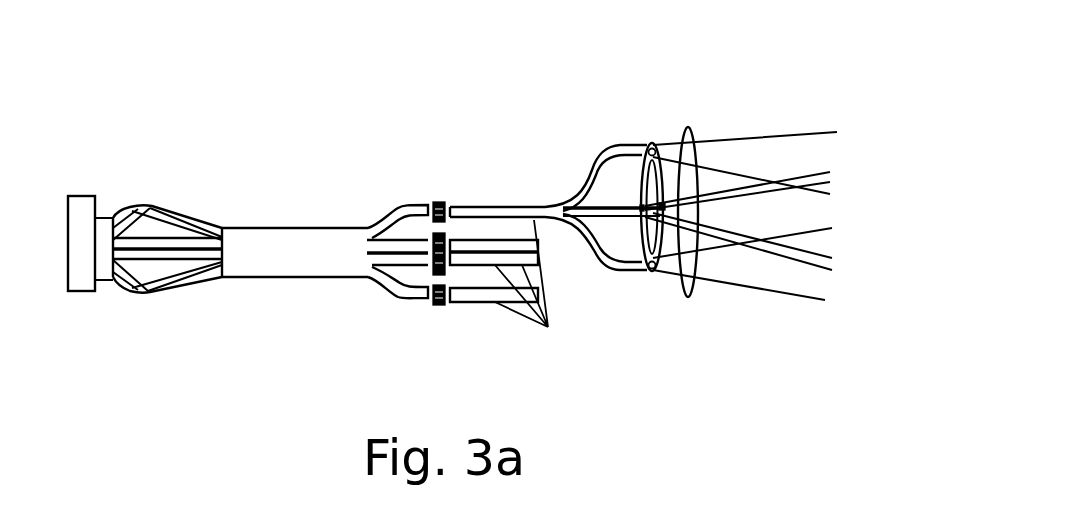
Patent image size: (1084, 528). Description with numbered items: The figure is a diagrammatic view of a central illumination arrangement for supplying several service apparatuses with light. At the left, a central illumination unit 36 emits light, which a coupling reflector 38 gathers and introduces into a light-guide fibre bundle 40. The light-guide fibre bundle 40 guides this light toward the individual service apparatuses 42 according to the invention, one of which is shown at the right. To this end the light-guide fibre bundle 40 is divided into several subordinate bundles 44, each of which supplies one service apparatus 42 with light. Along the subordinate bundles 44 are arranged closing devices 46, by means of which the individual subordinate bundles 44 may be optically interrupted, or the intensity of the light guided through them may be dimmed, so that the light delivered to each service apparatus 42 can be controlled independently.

The central illumination unit 36 is at (123, 183).
The coupling reflector 38 is at (140, 290).
The light-guide fibre bundle 40 is at (288, 262).
The service apparatus 42 is at (647, 102).
The subordinate bundle 44 is at (387, 218).
The closing device 46 is at (453, 208).